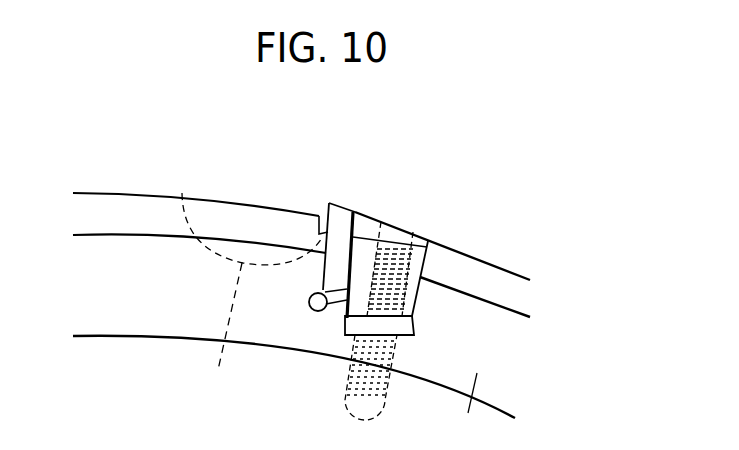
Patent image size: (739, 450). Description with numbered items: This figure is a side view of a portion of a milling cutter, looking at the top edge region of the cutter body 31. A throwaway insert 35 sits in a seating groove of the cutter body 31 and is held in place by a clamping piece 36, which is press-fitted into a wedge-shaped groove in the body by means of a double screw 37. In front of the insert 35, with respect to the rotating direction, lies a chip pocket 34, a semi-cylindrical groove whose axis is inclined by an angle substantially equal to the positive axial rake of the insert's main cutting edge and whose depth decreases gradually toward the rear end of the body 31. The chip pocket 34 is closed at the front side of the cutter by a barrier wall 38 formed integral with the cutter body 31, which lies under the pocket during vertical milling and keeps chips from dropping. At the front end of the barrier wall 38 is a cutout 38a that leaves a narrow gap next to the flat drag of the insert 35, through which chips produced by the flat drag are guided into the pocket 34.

The barrier wall 38 is at (223, 220).
The cutout 38a is at (326, 202).
The throwaway insert 35 is at (345, 204).
The double screw 37 is at (410, 266).
The clamping piece 36 is at (412, 295).
The chip pocket 34 is at (219, 336).
The cutter body 31 is at (294, 393).